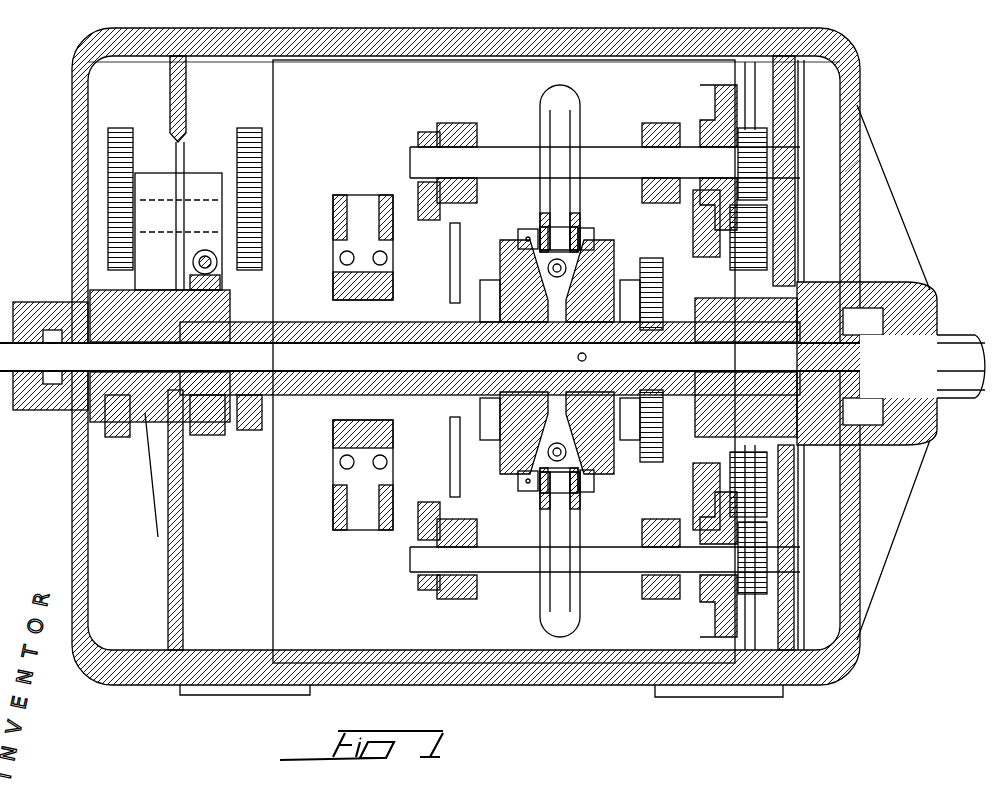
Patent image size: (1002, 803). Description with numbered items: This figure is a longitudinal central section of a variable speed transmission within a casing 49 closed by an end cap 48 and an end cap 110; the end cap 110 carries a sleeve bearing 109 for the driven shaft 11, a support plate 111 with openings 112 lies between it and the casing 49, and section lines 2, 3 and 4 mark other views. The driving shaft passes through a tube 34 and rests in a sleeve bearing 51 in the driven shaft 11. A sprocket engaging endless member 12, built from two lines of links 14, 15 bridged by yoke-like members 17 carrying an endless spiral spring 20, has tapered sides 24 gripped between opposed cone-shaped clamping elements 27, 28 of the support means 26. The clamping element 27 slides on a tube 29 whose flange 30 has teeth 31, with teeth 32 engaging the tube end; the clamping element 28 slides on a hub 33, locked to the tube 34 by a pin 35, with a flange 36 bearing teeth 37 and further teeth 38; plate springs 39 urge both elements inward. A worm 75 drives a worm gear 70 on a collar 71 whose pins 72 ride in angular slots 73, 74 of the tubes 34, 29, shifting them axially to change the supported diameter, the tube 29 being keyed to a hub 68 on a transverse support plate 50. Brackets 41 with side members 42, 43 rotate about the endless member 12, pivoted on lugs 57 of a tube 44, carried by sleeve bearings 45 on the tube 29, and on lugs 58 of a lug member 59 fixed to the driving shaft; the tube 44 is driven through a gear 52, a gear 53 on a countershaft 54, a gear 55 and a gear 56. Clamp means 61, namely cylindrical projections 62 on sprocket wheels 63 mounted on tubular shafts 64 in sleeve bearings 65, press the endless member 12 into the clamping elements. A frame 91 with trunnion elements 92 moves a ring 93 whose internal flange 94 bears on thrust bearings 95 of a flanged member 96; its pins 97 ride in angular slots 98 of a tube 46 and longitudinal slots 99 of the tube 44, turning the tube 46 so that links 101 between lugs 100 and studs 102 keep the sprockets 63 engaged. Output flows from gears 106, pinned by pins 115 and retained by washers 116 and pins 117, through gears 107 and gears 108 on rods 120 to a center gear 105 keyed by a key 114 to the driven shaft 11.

The section line 2- 2 is at (400, 12).
The section line 3- 3 is at (398, 75).
The section line 4- 4 is at (768, 97).
The driven shaft 11 is at (14, 345).
The sprocket engaging endless member 12 is at (596, 233).
The line of links 14 is at (546, 212).
The line of links 15 is at (588, 225).
The yoke-like member 17 is at (532, 227).
The endless spiral spring 20 is at (558, 250).
The tapered sides 24 is at (508, 250).
The support means 26 is at (621, 467).
The clamping element 27 is at (510, 470).
The clamping element 28 is at (605, 472).
The tube 29 is at (380, 378).
The flange 30 is at (498, 455).
The teeth 31 is at (489, 473).
The teeth 32 is at (490, 358).
The hub 33 is at (625, 425).
The tube 34 is at (439, 359).
The pin 35 is at (578, 357).
The flange 36 is at (620, 440).
The teeth 37 is at (620, 455).
The teeth 38 is at (521, 359).
The plate springs 39 is at (560, 360).
The brackets 41 is at (483, 128).
The bracket side member 42 is at (445, 125).
The bracket side member 43 is at (695, 255).
The tube 44 is at (426, 262).
The sleeve bearings 45 is at (430, 300).
The tube 46 is at (402, 300).
The end cap 48 is at (76, 462).
The casing 49 is at (528, 685).
The transverse support plate 50 is at (185, 527).
The sleeve bearing 51 is at (709, 438).
The gear 52 is at (118, 440).
The gear 53 is at (108, 147).
The countershaft 54 is at (200, 190).
The gear 55 is at (262, 146).
The gear 56 is at (248, 440).
The lugs 57 is at (477, 360).
The lugs 58 is at (650, 265).
The lug member 59 is at (687, 438).
The clamp means 61 is at (591, 117).
The cylindrical projections 62 is at (552, 100).
The sprocket wheels 63 is at (565, 93).
The tubular shafts 64 is at (488, 150).
The sleeve bearings 65 is at (460, 135).
The hub 68 is at (159, 442).
The worm gear 70 is at (205, 440).
The collar 71 is at (190, 300).
The pins 72 is at (174, 359).
The angular slot 73 is at (137, 359).
The angular slot 74 is at (254, 359).
The worm 75 is at (193, 262).
The frame 91 is at (380, 205).
The trunnion elements 92 is at (360, 212).
The ring 93 is at (333, 220).
The internal flange 94 is at (380, 256).
The thrust bearings 95 is at (340, 255).
The flanged member 96 is at (325, 446).
The pins 97 is at (333, 281).
The angular slots 98 is at (331, 359).
The longitudinal slots 99 is at (281, 362).
The lugs 100 is at (449, 487).
The links 101 is at (420, 205).
The studs 102 is at (412, 148).
The center gear 105 is at (748, 455).
The gear 106 is at (703, 95).
The gear 107 is at (762, 145).
The gear 108 is at (762, 243).
The sleeve bearing 109 is at (940, 335).
The end cap 110 is at (845, 172).
The support plate 111 is at (795, 263).
The openings 112 is at (790, 200).
The key 114 is at (757, 367).
The pins 115 is at (717, 363).
The washers 116 is at (635, 148).
The pins 117 is at (700, 165).
The rods 120 is at (650, 263).